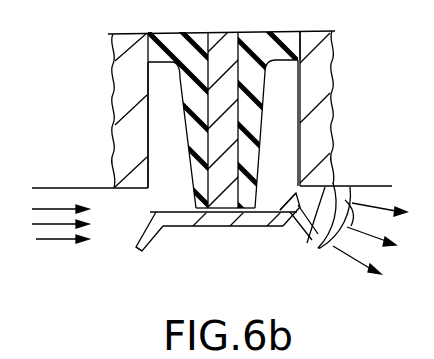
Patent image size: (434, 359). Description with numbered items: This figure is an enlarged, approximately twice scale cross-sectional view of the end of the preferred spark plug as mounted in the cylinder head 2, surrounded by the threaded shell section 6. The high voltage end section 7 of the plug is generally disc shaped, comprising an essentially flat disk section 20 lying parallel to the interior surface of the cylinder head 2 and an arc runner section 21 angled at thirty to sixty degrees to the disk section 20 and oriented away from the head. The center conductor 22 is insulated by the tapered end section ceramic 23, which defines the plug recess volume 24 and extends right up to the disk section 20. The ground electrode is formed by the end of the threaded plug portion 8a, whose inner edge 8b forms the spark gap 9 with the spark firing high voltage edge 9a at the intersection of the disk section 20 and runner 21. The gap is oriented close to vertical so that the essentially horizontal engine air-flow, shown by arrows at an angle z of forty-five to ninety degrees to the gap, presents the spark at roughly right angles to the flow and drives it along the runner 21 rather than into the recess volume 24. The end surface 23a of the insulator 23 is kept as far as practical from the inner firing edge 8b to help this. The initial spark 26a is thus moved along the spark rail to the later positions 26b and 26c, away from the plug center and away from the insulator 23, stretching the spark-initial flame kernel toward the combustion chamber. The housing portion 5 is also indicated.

The cylinder head 2 is at (370, 165).
The housing 5 is at (349, 63).
The threaded shell section 6 is at (333, 108).
The high voltage end section 7 is at (241, 238).
The threaded plug portion end 8a is at (289, 200).
The inner edge 8b is at (165, 178).
The spark gap 9 is at (151, 198).
The spark firing high voltage edge 9a is at (152, 219).
The disk section 20 is at (175, 227).
The arc runner section 21 is at (147, 251).
The center conductor 22 is at (213, 115).
The tapered end section ceramic 23 is at (252, 85).
The end surface of insulator 23a is at (257, 167).
The plug recess volume 24 is at (287, 134).
The initial spark 26a is at (299, 228).
The later spark position 26b is at (316, 246).
The later spark position 26c is at (332, 246).
The air-flow angle z is at (370, 237).